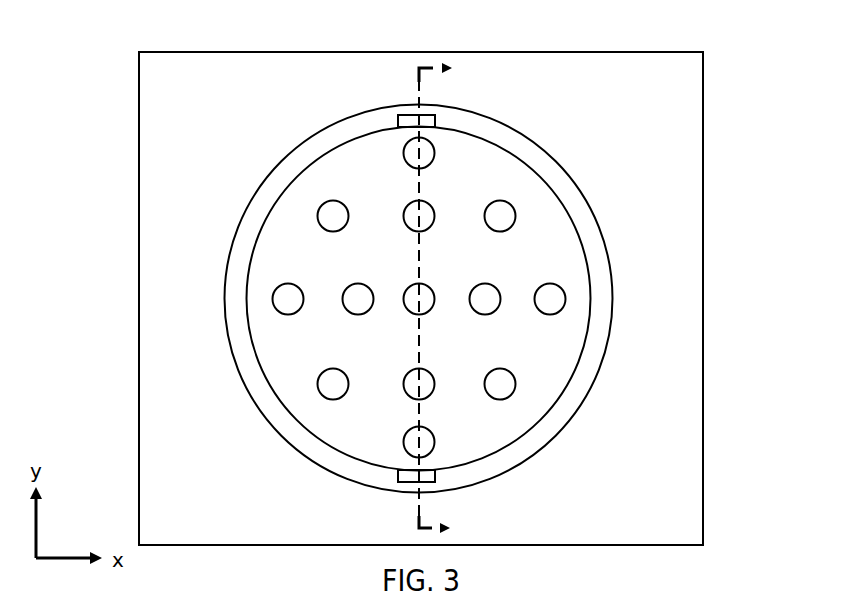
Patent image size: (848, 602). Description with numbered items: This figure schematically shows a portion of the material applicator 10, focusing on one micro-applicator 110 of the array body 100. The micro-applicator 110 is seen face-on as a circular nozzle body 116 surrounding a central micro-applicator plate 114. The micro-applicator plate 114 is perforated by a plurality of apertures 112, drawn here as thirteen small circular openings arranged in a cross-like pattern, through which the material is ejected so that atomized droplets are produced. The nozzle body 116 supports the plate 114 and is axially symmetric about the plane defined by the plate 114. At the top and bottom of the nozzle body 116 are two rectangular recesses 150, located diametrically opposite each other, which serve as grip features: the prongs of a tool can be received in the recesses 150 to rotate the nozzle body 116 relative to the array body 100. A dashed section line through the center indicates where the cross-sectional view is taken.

The material applicator 10 is at (460, 279).
The array body 100 is at (537, 82).
The micro-applicator 110 is at (425, 291).
The apertures 112 is at (563, 288).
The micro-applicator plate 114 is at (553, 364).
The nozzle body 116 is at (555, 180).
The rectangular recesses 150 is at (372, 101).